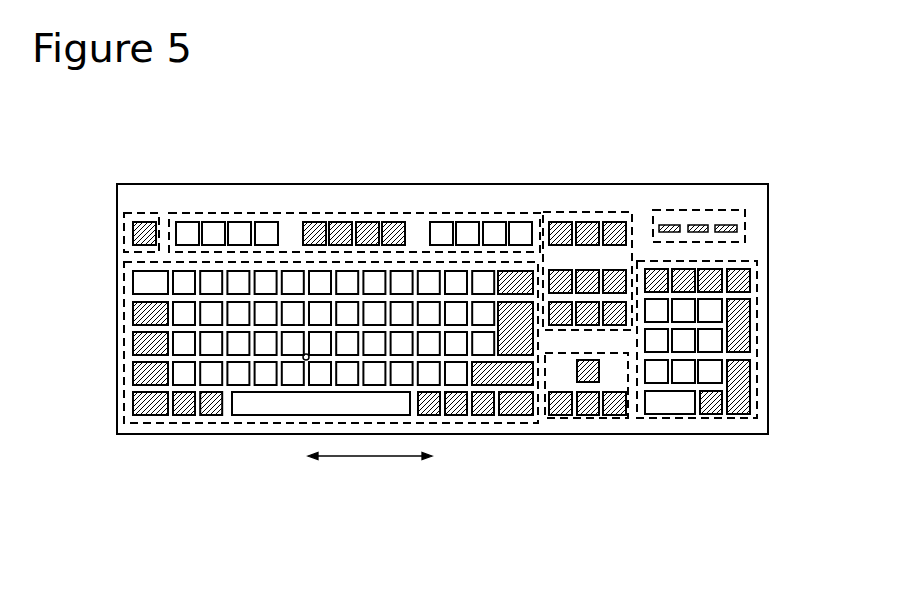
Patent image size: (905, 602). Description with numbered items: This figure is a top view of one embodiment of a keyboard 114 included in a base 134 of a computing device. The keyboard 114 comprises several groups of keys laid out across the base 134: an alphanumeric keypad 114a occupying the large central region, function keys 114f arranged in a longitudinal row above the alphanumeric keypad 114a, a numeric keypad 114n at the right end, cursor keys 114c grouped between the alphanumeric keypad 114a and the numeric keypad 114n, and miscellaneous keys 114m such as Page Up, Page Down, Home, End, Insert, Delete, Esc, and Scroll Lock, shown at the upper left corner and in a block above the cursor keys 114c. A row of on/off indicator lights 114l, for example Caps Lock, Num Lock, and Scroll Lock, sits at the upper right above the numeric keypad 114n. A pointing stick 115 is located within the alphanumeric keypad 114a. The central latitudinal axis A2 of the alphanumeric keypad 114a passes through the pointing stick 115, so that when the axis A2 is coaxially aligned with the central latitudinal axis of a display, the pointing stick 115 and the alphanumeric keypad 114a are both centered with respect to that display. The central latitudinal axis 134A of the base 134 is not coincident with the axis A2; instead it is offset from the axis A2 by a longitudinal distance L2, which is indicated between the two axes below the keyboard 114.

The keyboard 114 is at (585, 163).
The miscellaneous keys 114m is at (138, 213).
The function keys 114f is at (198, 213).
The alphanumeric keypad 114a is at (193, 421).
The pointing stick 115 is at (304, 360).
The cursor keys 114c is at (568, 420).
The on/off indicator lights 114l is at (693, 212).
The numeric keypad 114n is at (689, 418).
The base 134 is at (760, 220).
The central latitudinal axis of the base 134A is at (432, 492).
The central latitudinal axis of the alphanumeric keypad A2 is at (307, 492).
The longitudinal distance L2 is at (370, 471).